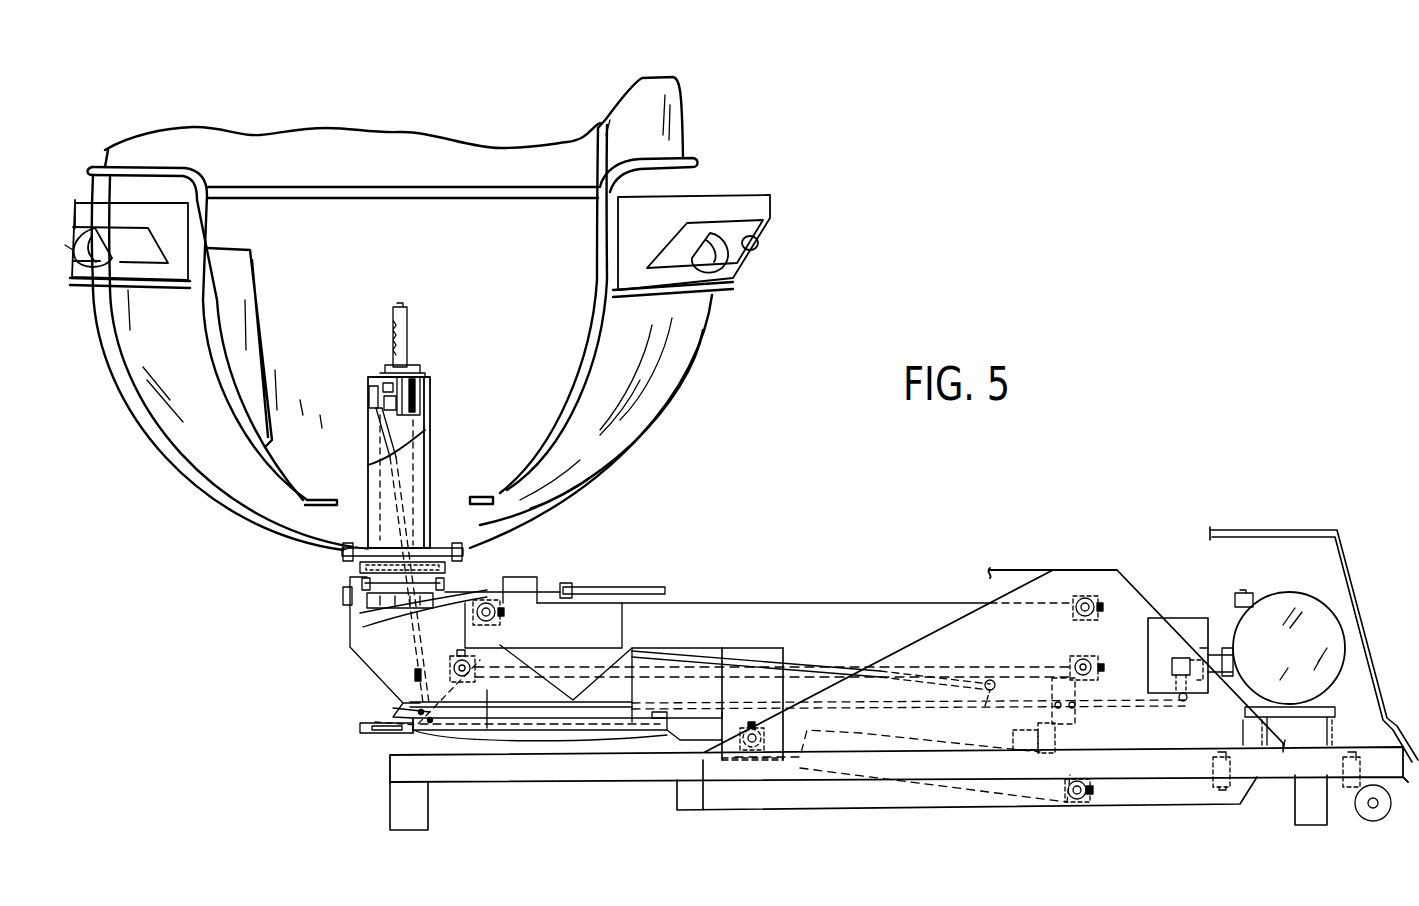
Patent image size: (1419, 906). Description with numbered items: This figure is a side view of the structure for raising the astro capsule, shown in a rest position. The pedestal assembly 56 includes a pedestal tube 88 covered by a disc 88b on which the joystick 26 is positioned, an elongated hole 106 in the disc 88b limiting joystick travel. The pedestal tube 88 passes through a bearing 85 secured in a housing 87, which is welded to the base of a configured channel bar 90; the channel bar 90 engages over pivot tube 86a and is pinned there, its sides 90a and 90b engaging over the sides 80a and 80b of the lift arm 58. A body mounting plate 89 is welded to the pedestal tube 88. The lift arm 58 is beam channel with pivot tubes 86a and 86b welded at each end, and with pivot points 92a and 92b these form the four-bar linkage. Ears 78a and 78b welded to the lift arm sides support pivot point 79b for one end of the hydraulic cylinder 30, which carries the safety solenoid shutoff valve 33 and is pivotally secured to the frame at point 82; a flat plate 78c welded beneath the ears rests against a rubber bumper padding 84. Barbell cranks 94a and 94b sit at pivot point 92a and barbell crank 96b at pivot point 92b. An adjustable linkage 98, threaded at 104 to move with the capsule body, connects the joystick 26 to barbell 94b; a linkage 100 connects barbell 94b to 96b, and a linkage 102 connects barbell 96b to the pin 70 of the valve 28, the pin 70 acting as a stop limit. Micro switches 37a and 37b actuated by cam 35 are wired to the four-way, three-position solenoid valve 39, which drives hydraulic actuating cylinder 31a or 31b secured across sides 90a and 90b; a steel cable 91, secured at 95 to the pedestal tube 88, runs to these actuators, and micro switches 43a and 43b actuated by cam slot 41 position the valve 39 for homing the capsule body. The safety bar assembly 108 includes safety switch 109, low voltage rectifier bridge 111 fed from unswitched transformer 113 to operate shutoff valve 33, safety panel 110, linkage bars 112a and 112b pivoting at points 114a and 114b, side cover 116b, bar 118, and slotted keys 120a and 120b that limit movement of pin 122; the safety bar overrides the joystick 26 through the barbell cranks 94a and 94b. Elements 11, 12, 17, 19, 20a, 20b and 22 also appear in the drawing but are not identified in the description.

The joystick 26 is at (408, 325).
The elongated hole 106 is at (388, 372).
The disc covering 88b is at (420, 377).
The pedestal tube 88 is at (432, 387).
The cam 35 is at (383, 386).
The micro switch 37a is at (368, 393).
The micro switch 37b is at (384, 400).
The adjustable linkage 98 is at (380, 437).
The pedestal assembly 56 is at (438, 452).
The astro capsule body mounting plate 89 is at (364, 520).
The bearing 85 is at (377, 555).
The housing 87 is at (352, 565).
The micro switch 43b is at (362, 583).
The cable securing point 95 is at (343, 596).
The cam slot 41 is at (360, 613).
The steel cable 91 is at (363, 627).
The micro switch 43a is at (440, 578).
The side of channel bar 90b is at (505, 578).
The configured channel bar 90 is at (565, 552).
The side of channel bar 90a is at (455, 641).
The pivot tube 86a is at (498, 617).
The pivot point 92a is at (468, 665).
The side cover 116b is at (528, 701).
The threaded end of linkage 104 is at (412, 675).
The barbell crank 94a is at (395, 710).
The barbell crank 94b is at (375, 722).
The slotted key 120b is at (365, 736).
The slotted key 120a is at (383, 748).
The pin 122 is at (388, 738).
The safety bar assembly 108 is at (512, 742).
The safety switch 109 is at (557, 727).
The safety panel 110 is at (612, 735).
The bar 118 is at (676, 730).
The low voltage rectifier bridge 111 is at (660, 712).
The linkage 100 is at (716, 712).
The ear 78a is at (724, 650).
The ear 78b is at (757, 648).
The pivot point 79b is at (749, 730).
The flat plate 78c is at (732, 772).
The rubber bumper padding 84 is at (765, 768).
The hydraulic actuating cylinder 31a is at (600, 588).
The hydraulic actuating cylinder 31b is at (655, 588).
The lift arm assembly 58 is at (800, 603).
The lift arm side 80a is at (886, 603).
The lift arm side 80b is at (958, 603).
The pivot arm 11 is at (1010, 570).
The linkage bar 112b is at (770, 665).
The linkage bar 112a is at (846, 668).
The pivot point 114b is at (991, 684).
The pivot point 114a is at (985, 706).
The conveyor assembly 22 is at (1036, 623).
The pivot tube 86b is at (1085, 616).
The pivot point 92b is at (1090, 665).
The barbell crank 96b is at (1075, 700).
The linkage 102 is at (1130, 704).
The safety solenoid shutoff valve 33 is at (1057, 742).
The hydraulic cylinder 30 is at (915, 790).
The pivot point 82 is at (1085, 795).
The chute wall 20a is at (1130, 572).
The chute wall 20b is at (1138, 590).
The control box 17 is at (1178, 618).
The coupling 19 is at (1200, 618).
The unswitched transformer 113 is at (1253, 596).
The four-way, three-position solenoid valve 39 is at (1215, 655).
The valve 28 is at (1178, 680).
The pin 70 is at (1187, 699).
The frame guard 12 is at (1393, 780).